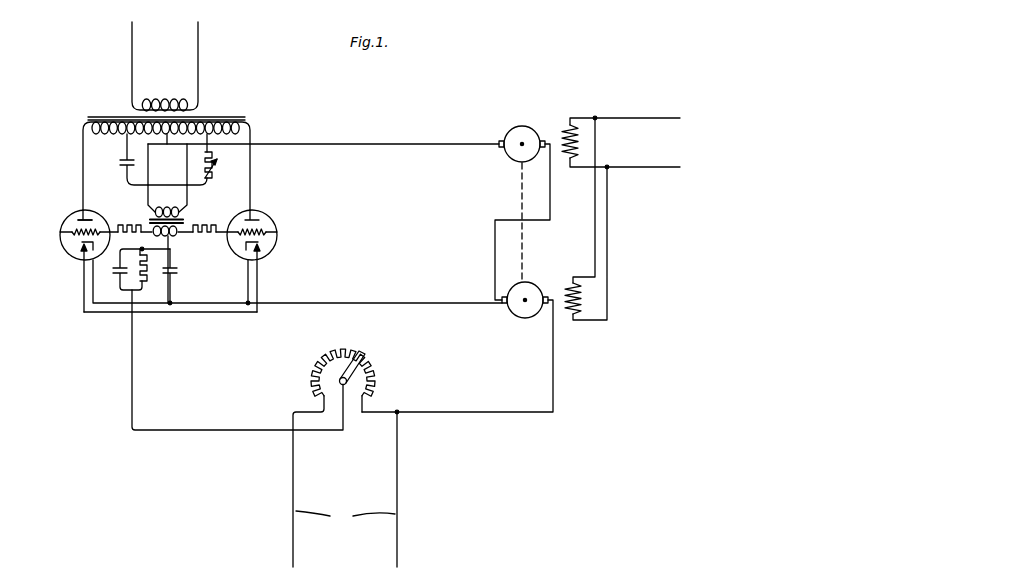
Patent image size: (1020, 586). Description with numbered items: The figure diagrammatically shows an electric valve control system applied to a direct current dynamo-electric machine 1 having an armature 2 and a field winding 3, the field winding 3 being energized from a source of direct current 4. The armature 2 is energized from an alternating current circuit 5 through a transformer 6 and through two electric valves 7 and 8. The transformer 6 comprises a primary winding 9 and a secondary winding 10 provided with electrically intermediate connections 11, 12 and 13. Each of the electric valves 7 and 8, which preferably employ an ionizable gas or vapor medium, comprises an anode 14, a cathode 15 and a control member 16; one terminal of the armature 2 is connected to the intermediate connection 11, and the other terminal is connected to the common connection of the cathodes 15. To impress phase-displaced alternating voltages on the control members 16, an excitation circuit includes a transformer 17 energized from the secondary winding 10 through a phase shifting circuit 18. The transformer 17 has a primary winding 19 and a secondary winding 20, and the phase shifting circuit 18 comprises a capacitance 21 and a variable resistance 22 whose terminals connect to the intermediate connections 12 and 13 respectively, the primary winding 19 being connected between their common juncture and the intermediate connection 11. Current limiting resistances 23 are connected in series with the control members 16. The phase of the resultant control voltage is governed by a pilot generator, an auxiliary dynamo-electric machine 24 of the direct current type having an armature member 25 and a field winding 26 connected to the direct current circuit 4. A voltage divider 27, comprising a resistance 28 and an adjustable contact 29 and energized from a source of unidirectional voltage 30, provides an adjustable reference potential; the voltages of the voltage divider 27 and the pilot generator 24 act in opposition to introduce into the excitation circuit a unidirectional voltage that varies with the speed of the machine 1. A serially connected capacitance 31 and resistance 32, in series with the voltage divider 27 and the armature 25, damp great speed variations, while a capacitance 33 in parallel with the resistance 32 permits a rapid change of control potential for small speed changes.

The dynamo-electric machine 1 is at (556, 115).
The armature 2 is at (510, 132).
The field winding 3 is at (619, 151).
The source of direct current 4 is at (641, 119).
The alternating current circuit 5 is at (198, 45).
The transformer 6 is at (246, 117).
The electric valve 7 is at (68, 214).
The electric valve 8 is at (266, 217).
The primary winding 9 is at (166, 99).
The secondary winding 10 is at (91, 129).
The intermediate connection 11 is at (165, 138).
The intermediate connection 12 is at (125, 135).
The intermediate connection 13 is at (208, 138).
The anode 14 is at (92, 221).
The cathode 15 is at (80, 244).
The control member 16 is at (62, 233).
The transformer 17 is at (186, 221).
The phase shifting circuit 18 is at (178, 170).
The primary winding 19 is at (171, 209).
The secondary winding 20 is at (172, 238).
The capacitance 21 is at (120, 162).
The variable resistance 22 is at (218, 178).
The current limiting resistance 23 is at (130, 226).
The auxiliary dynamo-electric machine 24 is at (570, 273).
The armature member 25 is at (525, 319).
The field winding 26 is at (566, 317).
The voltage divider 27 is at (402, 388).
The resistance 28 is at (331, 347).
The adjustable contact 29 is at (366, 358).
The source of unidirectional voltage 30 is at (350, 490).
The capacitance 31 is at (173, 270).
The resistance 32 is at (145, 283).
The capacitance 33 is at (117, 270).